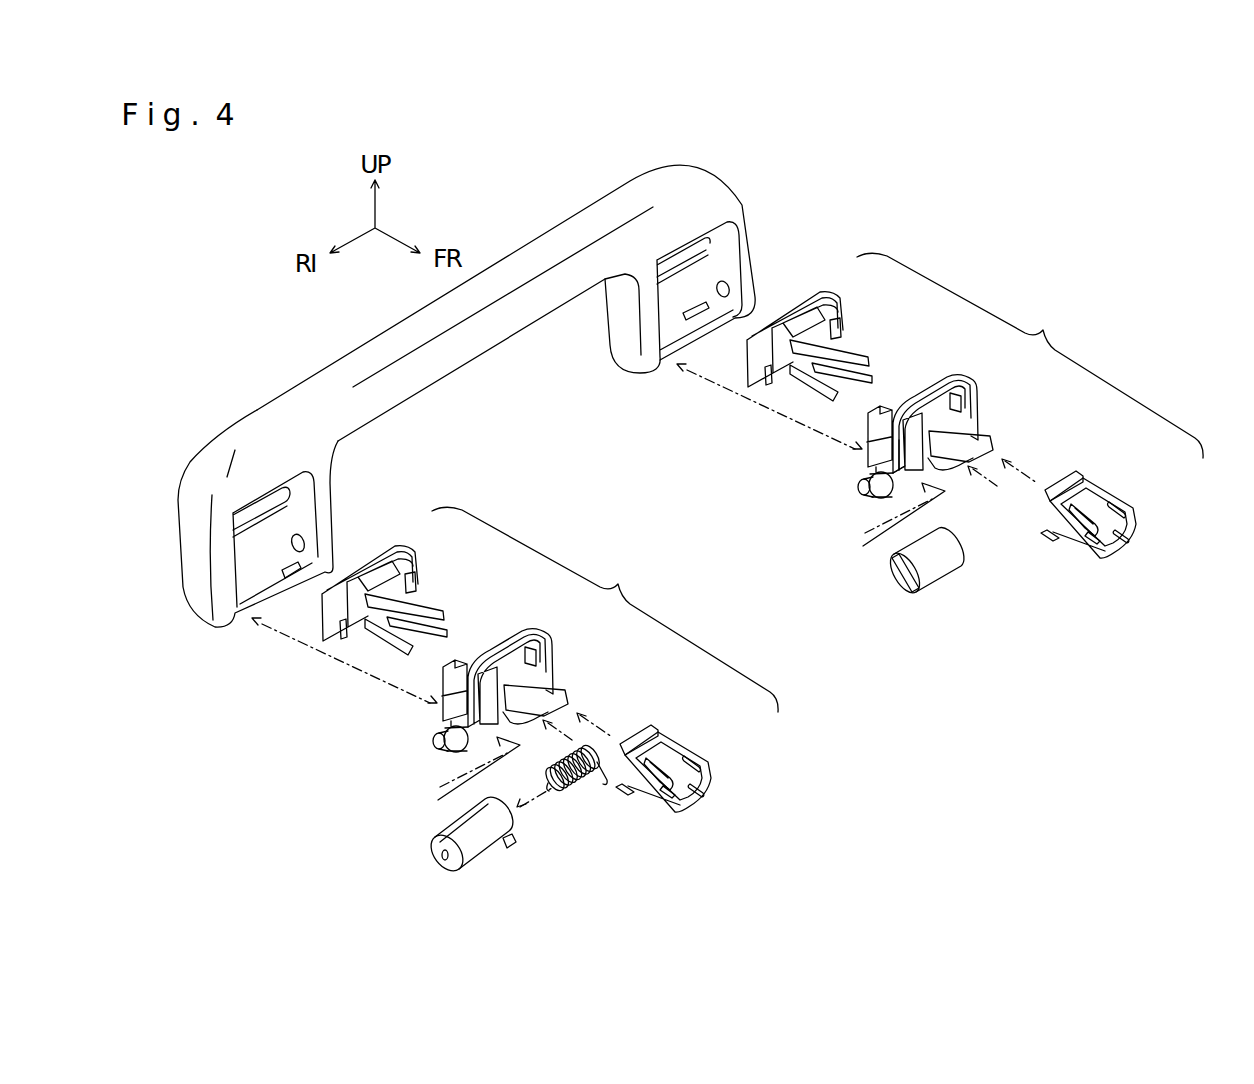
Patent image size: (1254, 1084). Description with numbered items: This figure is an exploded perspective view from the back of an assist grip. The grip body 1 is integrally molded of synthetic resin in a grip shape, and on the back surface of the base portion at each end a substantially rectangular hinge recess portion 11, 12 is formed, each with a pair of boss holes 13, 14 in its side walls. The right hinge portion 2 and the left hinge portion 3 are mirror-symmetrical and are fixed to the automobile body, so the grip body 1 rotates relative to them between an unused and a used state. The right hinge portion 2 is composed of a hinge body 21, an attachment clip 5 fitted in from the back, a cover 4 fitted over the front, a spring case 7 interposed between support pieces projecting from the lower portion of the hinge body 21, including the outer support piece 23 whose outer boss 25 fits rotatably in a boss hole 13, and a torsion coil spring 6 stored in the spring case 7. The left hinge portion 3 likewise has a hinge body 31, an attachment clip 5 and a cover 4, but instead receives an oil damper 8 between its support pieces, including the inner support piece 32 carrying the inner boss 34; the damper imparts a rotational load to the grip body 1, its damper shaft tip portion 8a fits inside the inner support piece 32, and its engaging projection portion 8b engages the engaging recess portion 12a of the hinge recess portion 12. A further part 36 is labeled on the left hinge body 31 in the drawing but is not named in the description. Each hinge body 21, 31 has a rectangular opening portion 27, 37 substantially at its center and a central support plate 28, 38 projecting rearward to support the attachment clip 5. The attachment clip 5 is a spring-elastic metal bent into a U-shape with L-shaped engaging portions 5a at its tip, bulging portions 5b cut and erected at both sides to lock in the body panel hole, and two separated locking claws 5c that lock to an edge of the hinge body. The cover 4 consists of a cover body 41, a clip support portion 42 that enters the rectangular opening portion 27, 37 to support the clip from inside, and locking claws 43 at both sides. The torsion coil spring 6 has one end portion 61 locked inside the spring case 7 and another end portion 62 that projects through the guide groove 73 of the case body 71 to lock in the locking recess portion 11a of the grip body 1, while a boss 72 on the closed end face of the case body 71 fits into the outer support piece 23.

The grip body 1 is at (390, 327).
The right hinge portion 2 is at (605, 609).
The left hinge portion 3 is at (1030, 355).
The cover 4 is at (309, 629).
The attachment clip 5 is at (700, 765).
The engaging portion 5a is at (625, 742).
The bulging portion 5b is at (690, 760).
The locking claw 5c is at (650, 748).
The torsion coil spring 6 is at (576, 802).
The spring case 7 is at (484, 878).
The oil damper 8 is at (895, 565).
The tip portion of damper shaft 8a is at (897, 585).
The engaging projection portion 8b is at (940, 585).
The hinge recess portion 11 is at (250, 549).
The locking recess portion 11a is at (305, 572).
The hinge recess portion 12 is at (708, 280).
The engaging recess portion 12a is at (706, 315).
The boss hole 13 is at (318, 545).
The boss hole 14 is at (728, 289).
The hinge body 21 is at (433, 706).
The outer support piece 23 is at (455, 752).
The outer boss 25 is at (433, 739).
The rectangular opening portion 27 is at (527, 642).
The central support plate 28 is at (548, 690).
The hinge body 31 is at (850, 429).
The inner support piece 32 is at (893, 500).
The inner boss 34 is at (860, 490).
The second hinge frame 36 is at (850, 477).
The rectangular opening portion 37 is at (952, 386).
The central support plate 38 is at (973, 436).
The cover body 41 is at (400, 548).
The clip support portion 42 is at (427, 594).
The locking claw 43 is at (425, 580).
The one end portion 61 is at (546, 778).
The other end portion 62 is at (605, 783).
The case body 71 is at (433, 838).
The boss 72 is at (443, 855).
The guide groove 73 is at (513, 847).